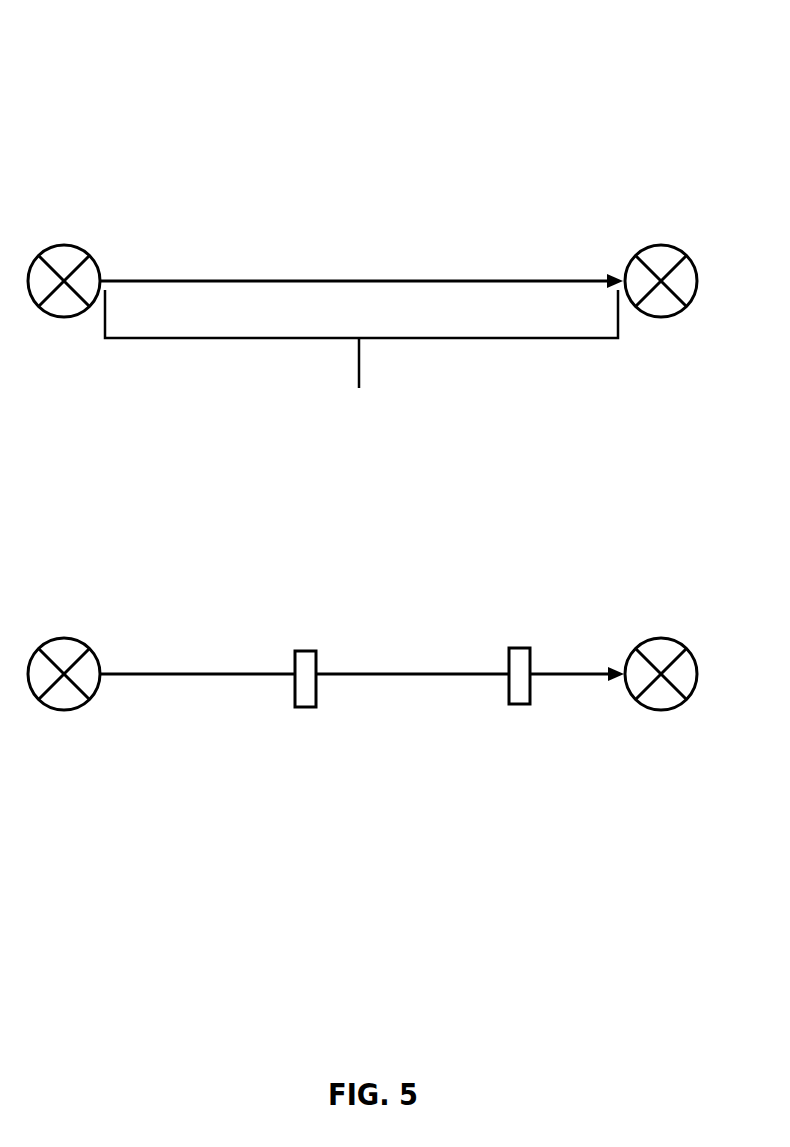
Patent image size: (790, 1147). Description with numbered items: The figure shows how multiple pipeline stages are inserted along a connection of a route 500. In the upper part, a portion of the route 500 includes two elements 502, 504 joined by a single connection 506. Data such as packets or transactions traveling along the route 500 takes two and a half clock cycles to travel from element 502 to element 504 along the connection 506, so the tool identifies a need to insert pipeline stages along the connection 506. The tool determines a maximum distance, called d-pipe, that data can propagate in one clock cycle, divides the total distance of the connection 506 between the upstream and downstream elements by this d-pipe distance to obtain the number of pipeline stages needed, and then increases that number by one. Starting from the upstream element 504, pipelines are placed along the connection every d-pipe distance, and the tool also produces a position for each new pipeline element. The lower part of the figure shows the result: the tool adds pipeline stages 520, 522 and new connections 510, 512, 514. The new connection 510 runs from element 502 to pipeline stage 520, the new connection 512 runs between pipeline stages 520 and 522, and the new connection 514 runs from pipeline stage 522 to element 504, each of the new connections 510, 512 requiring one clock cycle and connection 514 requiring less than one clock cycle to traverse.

The route 500 is at (360, 95).
The element 502 is at (65, 245).
The element 504 is at (660, 245).
The connection 506 is at (341, 278).
The new connection 510 is at (135, 672).
The new connection 512 is at (381, 672).
The new connection 514 is at (565, 670).
The pipeline stage 520 is at (305, 708).
The pipeline stage 522 is at (518, 705).